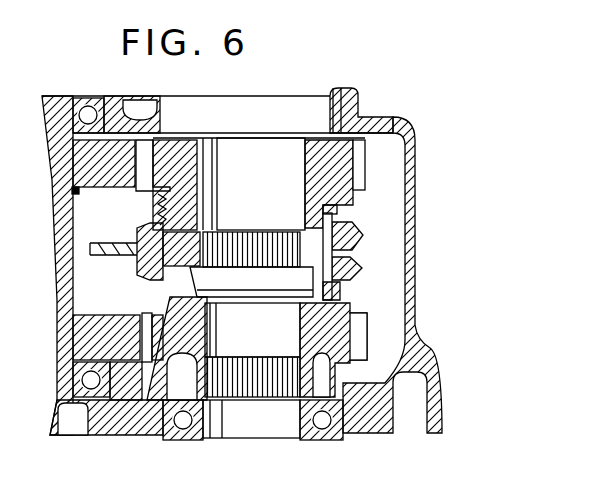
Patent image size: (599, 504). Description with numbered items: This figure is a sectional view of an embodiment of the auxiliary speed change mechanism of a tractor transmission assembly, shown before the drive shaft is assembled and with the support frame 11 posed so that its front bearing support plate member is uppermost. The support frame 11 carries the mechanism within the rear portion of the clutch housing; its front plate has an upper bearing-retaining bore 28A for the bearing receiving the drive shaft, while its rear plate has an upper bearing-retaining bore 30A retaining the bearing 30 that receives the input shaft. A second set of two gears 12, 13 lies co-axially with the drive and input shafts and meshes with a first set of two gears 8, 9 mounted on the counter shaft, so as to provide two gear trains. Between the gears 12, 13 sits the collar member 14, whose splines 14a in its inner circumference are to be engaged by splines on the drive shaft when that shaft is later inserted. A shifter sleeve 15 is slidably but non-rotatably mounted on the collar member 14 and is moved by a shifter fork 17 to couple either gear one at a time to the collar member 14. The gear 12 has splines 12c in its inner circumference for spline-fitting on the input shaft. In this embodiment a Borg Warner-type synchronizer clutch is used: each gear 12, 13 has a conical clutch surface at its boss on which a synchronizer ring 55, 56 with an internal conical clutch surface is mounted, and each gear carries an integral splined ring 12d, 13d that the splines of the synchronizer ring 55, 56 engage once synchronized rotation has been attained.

The upper bearing-retaining bore 28A is at (334, 88).
The gear 13 is at (352, 152).
The synchronizer ring 56 is at (335, 212).
The shifter sleeve 15 is at (360, 226).
The support frame 11 is at (425, 240).
The collar member 14 is at (306, 217).
The splines 14a is at (232, 230).
The synchronizer ring 55 is at (340, 290).
The gear 12 is at (365, 332).
The splines 12c is at (223, 365).
The splined ring 12d is at (141, 400).
The gear 9 is at (75, 192).
The splined ring 13d is at (172, 200).
The shifter fork 17 is at (140, 258).
The gear 8 is at (112, 342).
The bearing 30 is at (325, 440).
The upper bearing-retaining bore 30A is at (340, 437).